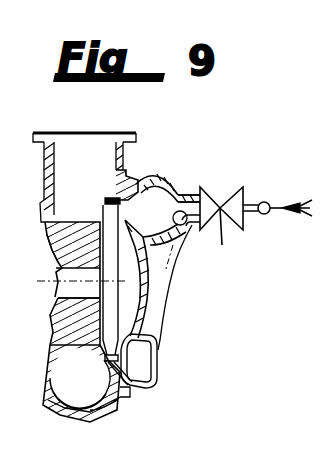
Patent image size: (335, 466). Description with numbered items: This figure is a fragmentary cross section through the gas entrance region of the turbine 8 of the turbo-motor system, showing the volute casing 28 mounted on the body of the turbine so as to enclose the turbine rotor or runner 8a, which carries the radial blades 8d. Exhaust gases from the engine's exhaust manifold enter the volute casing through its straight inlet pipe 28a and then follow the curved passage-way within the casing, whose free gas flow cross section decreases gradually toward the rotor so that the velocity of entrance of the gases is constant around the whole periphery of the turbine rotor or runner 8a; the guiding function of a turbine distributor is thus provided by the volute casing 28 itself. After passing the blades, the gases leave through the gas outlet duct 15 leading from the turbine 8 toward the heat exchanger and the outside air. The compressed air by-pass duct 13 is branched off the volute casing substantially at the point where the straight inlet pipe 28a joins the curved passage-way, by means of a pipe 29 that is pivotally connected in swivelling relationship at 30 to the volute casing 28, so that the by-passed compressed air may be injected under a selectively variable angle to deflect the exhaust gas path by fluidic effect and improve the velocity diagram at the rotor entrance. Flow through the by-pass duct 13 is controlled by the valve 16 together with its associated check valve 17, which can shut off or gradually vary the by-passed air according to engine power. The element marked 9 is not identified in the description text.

The turbine 8 is at (58, 336).
The turbine rotor or runner 8a is at (120, 310).
The radial blades 8d is at (130, 362).
The housing wall 9 is at (70, 256).
The compressed air by-pass duct 13 is at (282, 201).
The gas outlet duct 15 is at (82, 88).
The valve 16 is at (245, 228).
The check valve 17 is at (258, 194).
The volute casing 28 is at (168, 325).
The straight inlet pipe of the volute casing 28a is at (148, 188).
The pipe 29 is at (190, 192).
The swivelling pivotal connection 30 is at (180, 238).